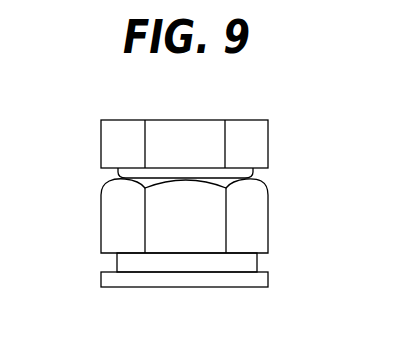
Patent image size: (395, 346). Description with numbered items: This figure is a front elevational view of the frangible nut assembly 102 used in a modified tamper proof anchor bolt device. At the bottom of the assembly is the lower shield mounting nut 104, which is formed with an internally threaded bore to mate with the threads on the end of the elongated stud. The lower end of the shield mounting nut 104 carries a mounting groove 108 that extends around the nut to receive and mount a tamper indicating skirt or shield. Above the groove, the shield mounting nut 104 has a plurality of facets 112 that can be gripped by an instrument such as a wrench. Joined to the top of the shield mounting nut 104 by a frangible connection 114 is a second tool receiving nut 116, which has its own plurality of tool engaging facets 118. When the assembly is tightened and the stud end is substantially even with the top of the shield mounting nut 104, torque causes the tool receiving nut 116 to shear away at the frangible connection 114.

The frangible nut assembly 102 is at (79, 186).
The shield mounting nut 104 is at (100, 223).
The mounting groove 108 is at (110, 265).
The facets 112 is at (215, 215).
The frangible connection 114 is at (250, 171).
The tool receiving nut 116 is at (126, 118).
The tool engaging facets 118 is at (212, 135).